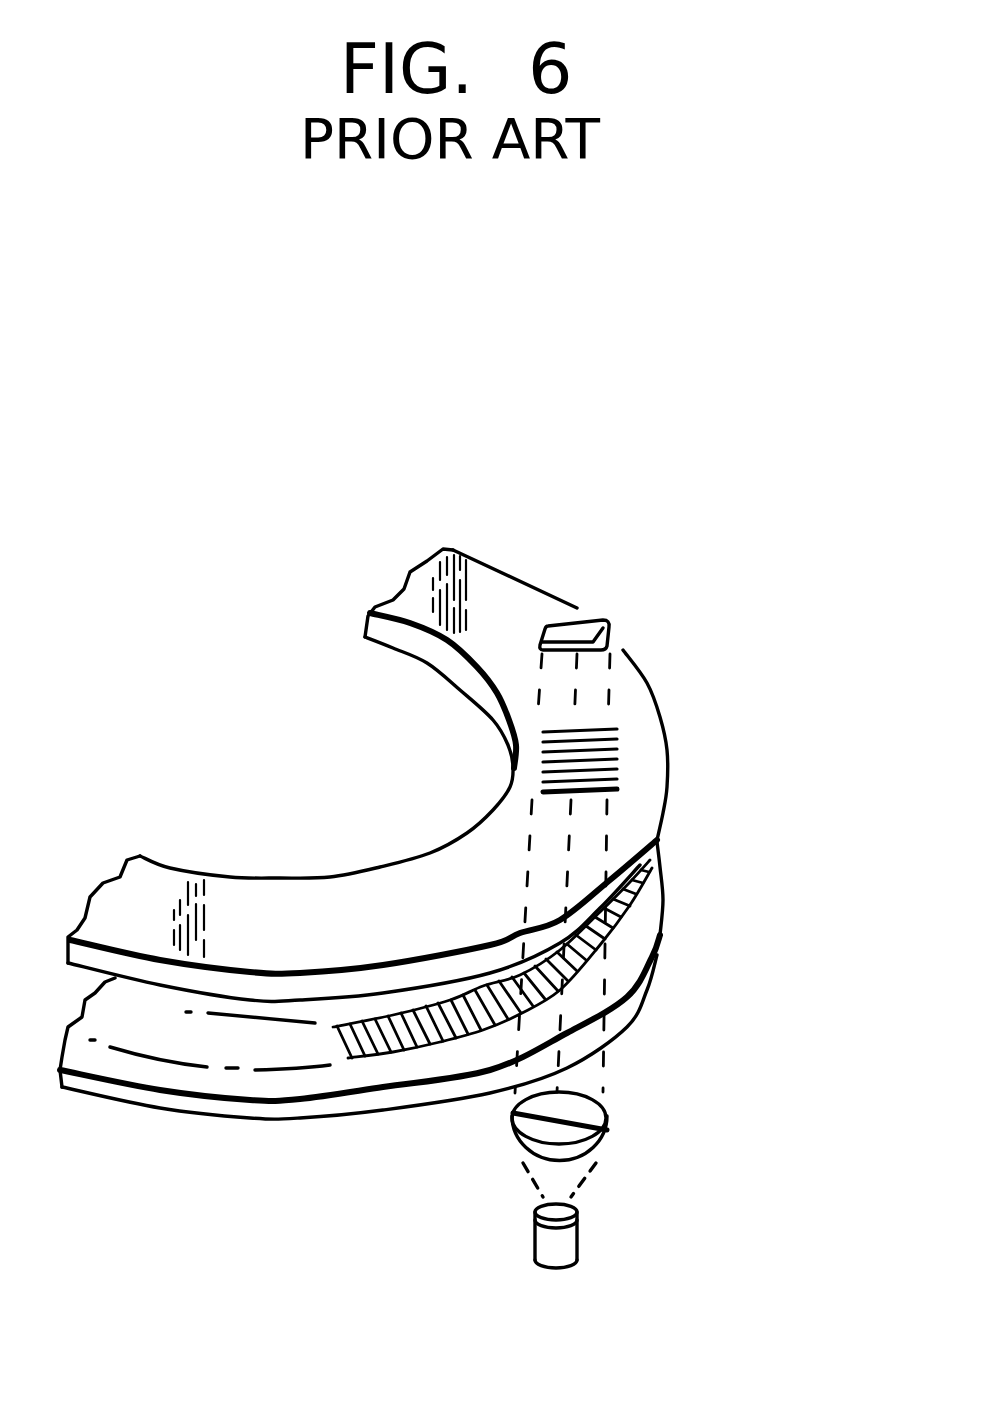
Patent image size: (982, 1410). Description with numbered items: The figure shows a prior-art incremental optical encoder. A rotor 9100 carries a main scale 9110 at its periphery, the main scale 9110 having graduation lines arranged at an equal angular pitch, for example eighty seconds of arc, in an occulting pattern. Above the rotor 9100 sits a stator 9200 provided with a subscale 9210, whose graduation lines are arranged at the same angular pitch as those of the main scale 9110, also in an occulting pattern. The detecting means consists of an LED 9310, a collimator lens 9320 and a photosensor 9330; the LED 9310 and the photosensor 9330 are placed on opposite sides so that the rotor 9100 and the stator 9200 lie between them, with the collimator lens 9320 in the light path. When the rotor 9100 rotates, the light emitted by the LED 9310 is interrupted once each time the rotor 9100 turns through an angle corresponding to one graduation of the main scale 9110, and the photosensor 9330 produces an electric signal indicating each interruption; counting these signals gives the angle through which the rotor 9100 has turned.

The rotor 9100 is at (228, 1112).
The main scale 9110 is at (600, 935).
The stator 9200 is at (272, 902).
The subscale 9210 is at (618, 751).
The LED (light emitting diode) 9310 is at (571, 1243).
The collimator lens 9320 is at (610, 1132).
The photosensor 9330 is at (612, 620).